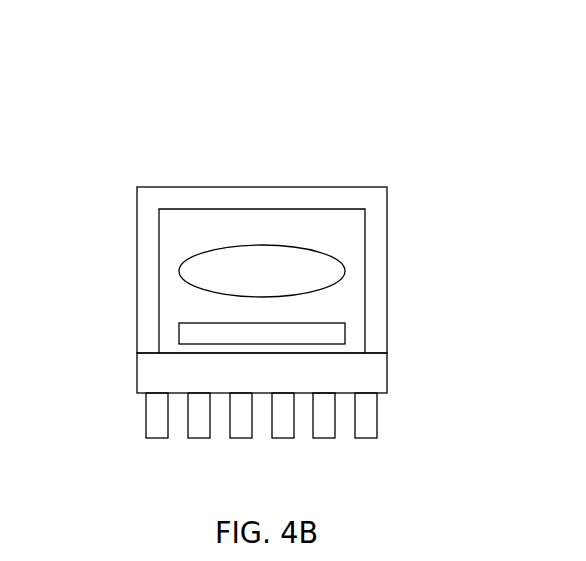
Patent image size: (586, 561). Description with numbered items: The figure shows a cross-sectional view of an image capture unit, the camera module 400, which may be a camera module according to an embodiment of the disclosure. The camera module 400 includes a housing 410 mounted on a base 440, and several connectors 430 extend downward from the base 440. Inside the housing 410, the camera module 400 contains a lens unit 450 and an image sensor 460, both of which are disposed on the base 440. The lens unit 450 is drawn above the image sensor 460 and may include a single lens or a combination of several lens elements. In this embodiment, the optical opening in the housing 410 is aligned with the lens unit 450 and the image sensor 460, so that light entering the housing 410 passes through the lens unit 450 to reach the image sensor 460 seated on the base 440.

The camera module 400 is at (254, 264).
The housing 410 is at (375, 251).
The connectors 430 is at (367, 424).
The base 440 is at (138, 370).
The lens unit 450 is at (289, 247).
The image sensor 460 is at (343, 323).